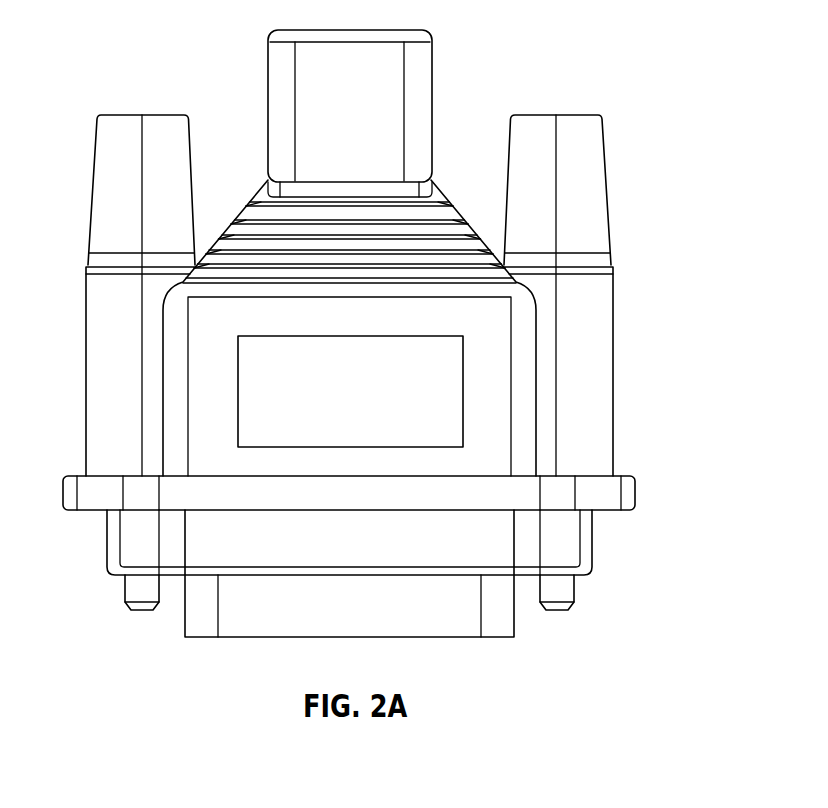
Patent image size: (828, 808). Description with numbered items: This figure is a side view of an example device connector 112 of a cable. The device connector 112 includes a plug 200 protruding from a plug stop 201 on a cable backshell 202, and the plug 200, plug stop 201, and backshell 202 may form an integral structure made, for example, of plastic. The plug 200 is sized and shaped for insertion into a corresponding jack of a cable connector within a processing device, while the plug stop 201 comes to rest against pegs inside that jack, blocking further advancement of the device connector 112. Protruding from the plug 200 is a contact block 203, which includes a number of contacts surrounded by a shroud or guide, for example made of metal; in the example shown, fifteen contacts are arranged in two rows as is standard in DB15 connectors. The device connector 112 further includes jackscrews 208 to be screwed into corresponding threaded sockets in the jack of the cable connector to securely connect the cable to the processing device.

The device connector 112 is at (635, 52).
The jackscrews 208 is at (107, 343).
The cable backshell 202 is at (490, 407).
The plug stop 201 is at (637, 492).
The plug 200 is at (593, 530).
The contact block 203 is at (503, 625).